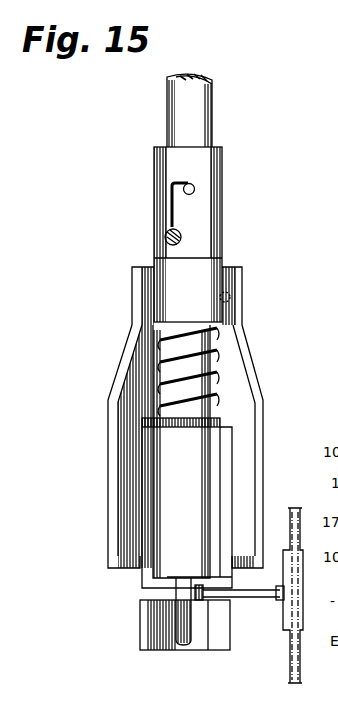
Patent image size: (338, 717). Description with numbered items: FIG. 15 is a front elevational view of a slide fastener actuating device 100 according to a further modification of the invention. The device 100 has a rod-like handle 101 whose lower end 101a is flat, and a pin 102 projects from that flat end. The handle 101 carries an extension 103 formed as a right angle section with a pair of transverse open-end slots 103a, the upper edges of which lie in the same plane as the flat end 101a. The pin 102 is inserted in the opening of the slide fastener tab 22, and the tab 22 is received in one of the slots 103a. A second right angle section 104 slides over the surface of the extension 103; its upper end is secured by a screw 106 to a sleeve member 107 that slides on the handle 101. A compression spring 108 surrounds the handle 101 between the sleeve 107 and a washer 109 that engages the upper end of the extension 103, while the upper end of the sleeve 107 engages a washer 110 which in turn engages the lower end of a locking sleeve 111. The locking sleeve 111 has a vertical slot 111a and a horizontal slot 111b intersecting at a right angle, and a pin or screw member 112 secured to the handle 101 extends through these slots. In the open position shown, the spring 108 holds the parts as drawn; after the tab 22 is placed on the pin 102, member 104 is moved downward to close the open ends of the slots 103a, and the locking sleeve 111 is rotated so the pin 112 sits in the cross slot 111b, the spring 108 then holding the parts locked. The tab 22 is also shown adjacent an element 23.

The slide fastener actuating device 100 is at (80, 208).
The rod-like handle 101 is at (168, 129).
The lower end of handle 101a is at (168, 558).
The pin 102 is at (195, 637).
The extension 103 is at (140, 574).
The slots 103a is at (137, 598).
The second right angle section 104 is at (122, 393).
The screw 106 is at (233, 293).
The sleeve member 107 is at (222, 268).
The compression spring 108 is at (167, 332).
The washer 109 is at (160, 418).
The washer 110 is at (154, 258).
The locking sleeve 111 is at (213, 220).
The vertical slot 111a is at (170, 201).
The horizontal slot 111b is at (196, 188).
The pin or screw member 112 is at (165, 237).
The slide fastener tab 22 is at (252, 598).
The bracket 23 is at (301, 683).